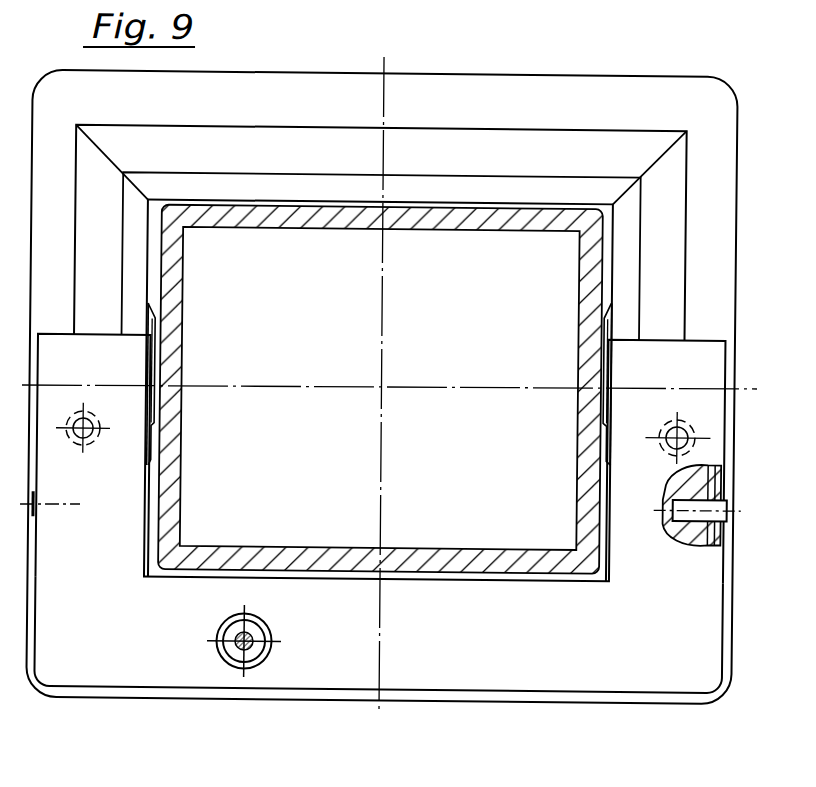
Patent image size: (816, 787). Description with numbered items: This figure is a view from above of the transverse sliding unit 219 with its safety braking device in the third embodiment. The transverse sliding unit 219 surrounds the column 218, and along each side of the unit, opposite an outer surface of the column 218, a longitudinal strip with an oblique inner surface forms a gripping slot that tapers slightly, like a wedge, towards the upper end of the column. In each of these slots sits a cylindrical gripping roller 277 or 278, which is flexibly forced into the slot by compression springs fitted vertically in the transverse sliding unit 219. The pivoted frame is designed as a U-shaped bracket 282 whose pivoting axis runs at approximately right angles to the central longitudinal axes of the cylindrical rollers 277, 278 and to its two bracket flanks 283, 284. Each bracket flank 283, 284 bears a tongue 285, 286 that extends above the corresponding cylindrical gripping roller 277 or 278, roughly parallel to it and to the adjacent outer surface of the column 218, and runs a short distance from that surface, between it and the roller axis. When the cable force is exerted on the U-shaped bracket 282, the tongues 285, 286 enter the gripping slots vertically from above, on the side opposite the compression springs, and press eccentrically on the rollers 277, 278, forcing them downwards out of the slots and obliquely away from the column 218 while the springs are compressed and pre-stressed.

The column 218 is at (249, 556).
The transverse sliding unit 219 is at (727, 236).
The cylindrical gripping roller 277 is at (151, 326).
The cylindrical gripping roller 278 is at (609, 331).
The U-shaped bracket 282 is at (356, 678).
The bracket flank 283 is at (81, 414).
The bracket flank 284 is at (723, 414).
The tongue 285 is at (138, 363).
The tongue 286 is at (617, 356).